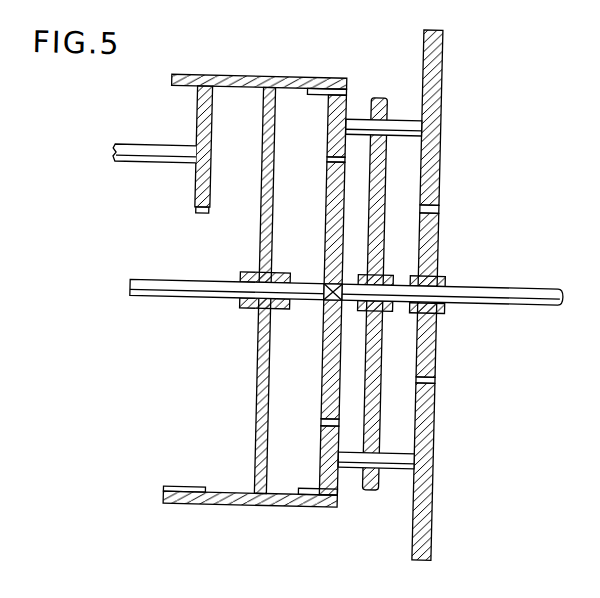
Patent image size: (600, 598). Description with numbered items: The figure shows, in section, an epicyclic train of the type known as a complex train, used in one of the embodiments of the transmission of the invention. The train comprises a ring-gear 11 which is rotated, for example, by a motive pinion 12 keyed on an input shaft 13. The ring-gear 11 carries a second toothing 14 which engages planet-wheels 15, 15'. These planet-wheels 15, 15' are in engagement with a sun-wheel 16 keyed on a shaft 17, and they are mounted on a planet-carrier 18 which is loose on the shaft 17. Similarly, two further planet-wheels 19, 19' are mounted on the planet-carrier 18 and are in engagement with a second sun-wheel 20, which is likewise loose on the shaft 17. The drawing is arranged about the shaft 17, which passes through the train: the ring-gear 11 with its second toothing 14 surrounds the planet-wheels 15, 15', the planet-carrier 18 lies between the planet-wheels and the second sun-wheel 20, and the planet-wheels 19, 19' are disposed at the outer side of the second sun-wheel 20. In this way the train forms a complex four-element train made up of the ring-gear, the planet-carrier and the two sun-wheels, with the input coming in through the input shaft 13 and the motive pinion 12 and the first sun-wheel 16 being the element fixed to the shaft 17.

The ring-gear 11 is at (233, 78).
The motive pinion 12 is at (198, 196).
The input shaft 13 is at (144, 149).
The second toothing 14 is at (333, 78).
The planet-wheel 15 is at (315, 122).
The planet-wheel 15' is at (308, 453).
The sun-wheel 16 is at (325, 353).
The shaft 17 is at (535, 284).
The planet-carrier 18 is at (375, 169).
The planet-wheel 19 is at (462, 118).
The second sun-wheel 20 is at (437, 240).
The planet-wheel 19' is at (452, 472).